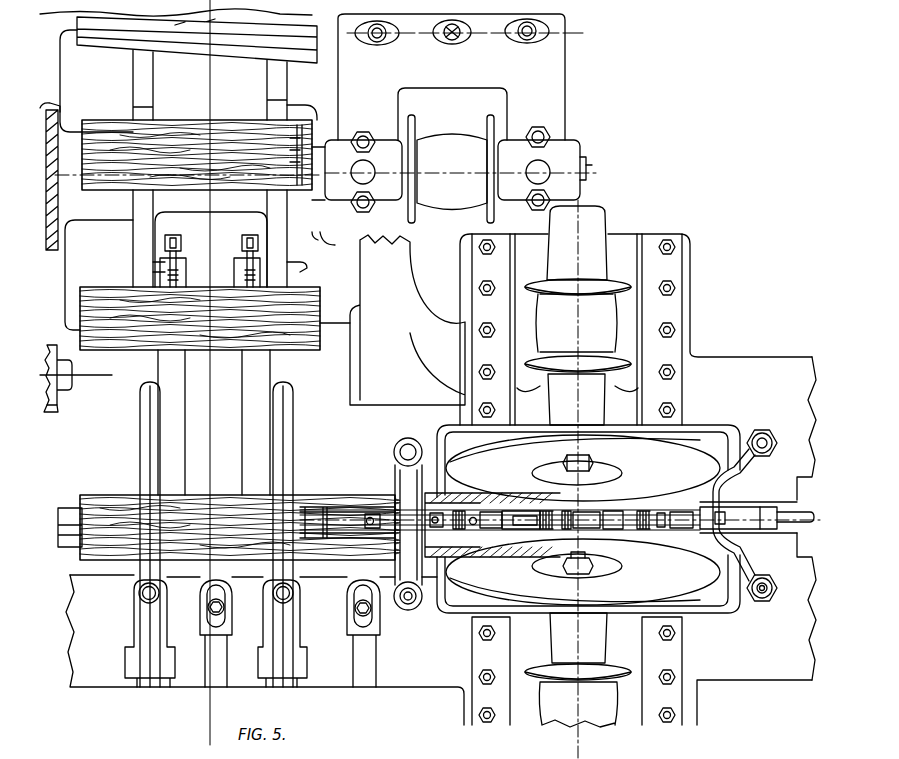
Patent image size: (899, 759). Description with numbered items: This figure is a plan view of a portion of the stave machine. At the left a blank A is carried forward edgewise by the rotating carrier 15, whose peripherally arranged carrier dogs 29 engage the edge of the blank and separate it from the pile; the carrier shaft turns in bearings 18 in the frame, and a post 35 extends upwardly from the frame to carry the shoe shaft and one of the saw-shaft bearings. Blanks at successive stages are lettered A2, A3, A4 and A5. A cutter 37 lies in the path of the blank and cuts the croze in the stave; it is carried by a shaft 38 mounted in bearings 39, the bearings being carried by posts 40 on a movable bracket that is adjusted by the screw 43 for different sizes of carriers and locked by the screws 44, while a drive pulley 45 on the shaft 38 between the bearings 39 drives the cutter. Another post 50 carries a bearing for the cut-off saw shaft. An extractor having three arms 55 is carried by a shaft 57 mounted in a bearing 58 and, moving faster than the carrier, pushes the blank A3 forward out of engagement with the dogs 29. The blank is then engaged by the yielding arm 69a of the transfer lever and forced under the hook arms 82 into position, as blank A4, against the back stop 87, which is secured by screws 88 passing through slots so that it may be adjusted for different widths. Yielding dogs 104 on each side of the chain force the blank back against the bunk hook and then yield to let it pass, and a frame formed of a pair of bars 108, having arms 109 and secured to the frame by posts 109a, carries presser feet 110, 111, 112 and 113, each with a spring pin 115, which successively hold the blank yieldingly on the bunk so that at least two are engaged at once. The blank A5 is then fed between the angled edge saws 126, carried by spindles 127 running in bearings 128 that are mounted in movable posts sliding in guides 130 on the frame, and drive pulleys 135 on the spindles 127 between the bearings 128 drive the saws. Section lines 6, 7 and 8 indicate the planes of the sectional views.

The blank A is at (112, 44).
The carrier 15 is at (140, 78).
The carrier dogs 29 is at (150, 116).
The second board A2 is at (225, 133).
The section line 7- 7 is at (608, 175).
The post 35 is at (50, 193).
The bearings 18 is at (98, 212).
The yielding arm 69a is at (183, 243).
The arms 55 is at (186, 276).
The blank A3 is at (118, 302).
The shaft 57 is at (74, 371).
The bearing 58 is at (62, 395).
The hook arms 82 is at (138, 437).
The blank A4 is at (203, 498).
The section line 6- 6 is at (818, 520).
The back stop 87 is at (192, 572).
The screws 88 is at (225, 606).
The yielding dogs 104 is at (350, 575).
The bars 108 is at (360, 512).
The spring pin 115 is at (370, 514).
The presser foot 110 is at (436, 518).
The presser foot 111 is at (500, 518).
The blank A5 is at (474, 546).
The edge saws 126 is at (664, 455).
The spindles 127 is at (618, 487).
The presser foot 112 is at (640, 540).
The presser foot 113 is at (768, 499).
The bearings 128 is at (592, 230).
The drive pulleys 135 is at (606, 288).
The guides 130 is at (684, 308).
The posts 109a is at (770, 434).
The arms 109 is at (758, 578).
The section line 8- 8 is at (575, 479).
The posts 40 is at (548, 92).
The screws 44 is at (377, 46).
The screw 43 is at (452, 45).
The bearings 39 is at (345, 192).
The shaft 38 is at (592, 172).
The drive pulley 45 is at (438, 146).
The cutter 37 is at (322, 244).
The post 50 is at (418, 272).